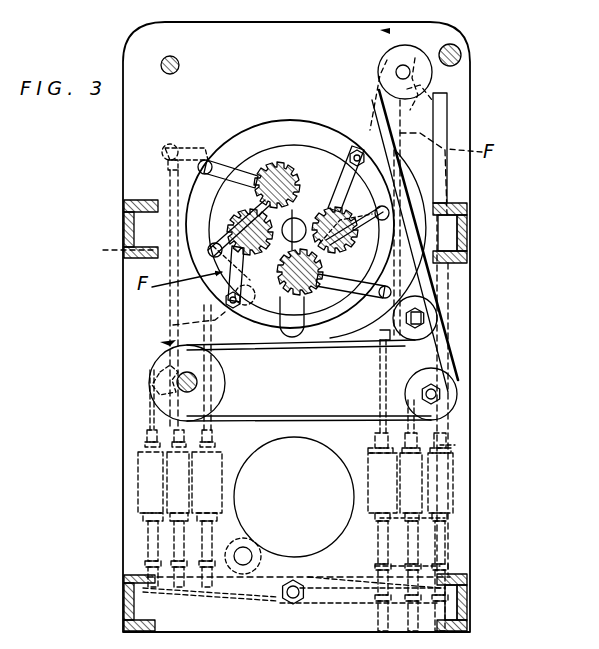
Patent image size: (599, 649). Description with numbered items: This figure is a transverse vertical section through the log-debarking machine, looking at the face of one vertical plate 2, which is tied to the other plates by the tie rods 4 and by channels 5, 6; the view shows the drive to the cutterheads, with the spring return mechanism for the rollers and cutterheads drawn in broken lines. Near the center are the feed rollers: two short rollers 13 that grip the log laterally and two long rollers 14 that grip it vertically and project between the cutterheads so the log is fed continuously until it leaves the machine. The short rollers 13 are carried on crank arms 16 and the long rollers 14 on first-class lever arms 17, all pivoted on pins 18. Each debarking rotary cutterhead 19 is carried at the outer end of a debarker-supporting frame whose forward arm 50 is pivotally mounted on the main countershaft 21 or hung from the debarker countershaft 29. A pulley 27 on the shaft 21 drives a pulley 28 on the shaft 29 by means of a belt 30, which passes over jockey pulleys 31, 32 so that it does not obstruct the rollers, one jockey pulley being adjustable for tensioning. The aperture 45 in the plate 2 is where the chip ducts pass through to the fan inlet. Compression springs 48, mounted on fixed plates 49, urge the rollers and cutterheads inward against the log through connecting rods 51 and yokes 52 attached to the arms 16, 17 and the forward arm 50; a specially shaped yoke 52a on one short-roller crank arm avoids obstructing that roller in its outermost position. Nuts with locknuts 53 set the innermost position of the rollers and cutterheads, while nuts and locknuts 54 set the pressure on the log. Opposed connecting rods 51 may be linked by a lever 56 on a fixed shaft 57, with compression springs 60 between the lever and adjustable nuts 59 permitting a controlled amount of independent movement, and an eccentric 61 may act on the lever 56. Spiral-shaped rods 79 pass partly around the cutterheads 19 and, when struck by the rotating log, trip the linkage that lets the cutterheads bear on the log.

The vertical plate 2 is at (470, 96).
The tie rod 4 is at (180, 67).
The channel 5 is at (468, 244).
The channel 6 is at (124, 602).
The short roller 13 is at (236, 222).
The long roller 14 is at (270, 163).
The crank arm 16 is at (213, 265).
The first-class lever arm 17 is at (235, 162).
The pin 18 is at (226, 300).
The debarking rotary cutterhead 19 is at (208, 202).
The main countershaft 21 is at (180, 390).
The pulley 27 is at (256, 345).
The pulley 28 is at (453, 50).
The debarker countershaft 29 is at (410, 72).
The belt 30 is at (447, 180).
The jockey pulley 31 is at (437, 320).
The jockey pulley 32 is at (457, 385).
The aperture 45 is at (331, 547).
The compression spring 48 is at (137, 477).
The fixed plate 49 is at (136, 513).
The forward arm 50 is at (173, 325).
The connecting rod 51 is at (496, 421).
The yoke 52 is at (167, 163).
The yoke 52a is at (440, 204).
The nuts with locknuts 53 is at (452, 450).
The nuts and locknuts 54 is at (440, 518).
The lever 56 is at (447, 594).
The fixed shaft 57 is at (281, 596).
The adjustable nuts with locknuts 59 is at (440, 566).
The compression spring 60 is at (465, 580).
The eccentric 61 is at (252, 547).
The spiral-shaped rod 79 is at (304, 226).